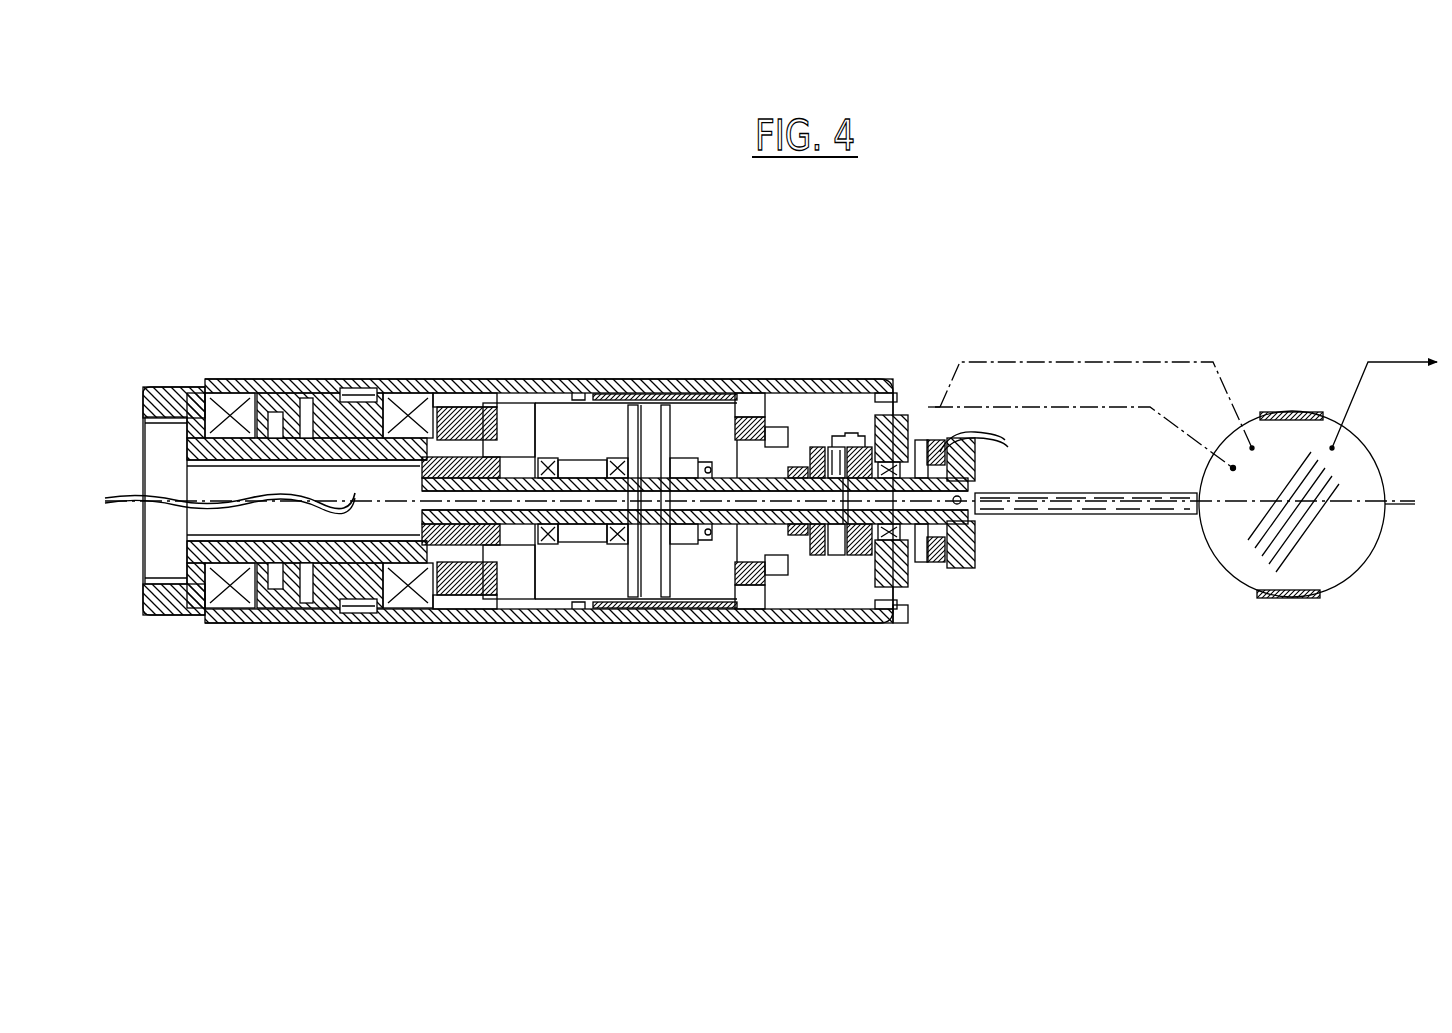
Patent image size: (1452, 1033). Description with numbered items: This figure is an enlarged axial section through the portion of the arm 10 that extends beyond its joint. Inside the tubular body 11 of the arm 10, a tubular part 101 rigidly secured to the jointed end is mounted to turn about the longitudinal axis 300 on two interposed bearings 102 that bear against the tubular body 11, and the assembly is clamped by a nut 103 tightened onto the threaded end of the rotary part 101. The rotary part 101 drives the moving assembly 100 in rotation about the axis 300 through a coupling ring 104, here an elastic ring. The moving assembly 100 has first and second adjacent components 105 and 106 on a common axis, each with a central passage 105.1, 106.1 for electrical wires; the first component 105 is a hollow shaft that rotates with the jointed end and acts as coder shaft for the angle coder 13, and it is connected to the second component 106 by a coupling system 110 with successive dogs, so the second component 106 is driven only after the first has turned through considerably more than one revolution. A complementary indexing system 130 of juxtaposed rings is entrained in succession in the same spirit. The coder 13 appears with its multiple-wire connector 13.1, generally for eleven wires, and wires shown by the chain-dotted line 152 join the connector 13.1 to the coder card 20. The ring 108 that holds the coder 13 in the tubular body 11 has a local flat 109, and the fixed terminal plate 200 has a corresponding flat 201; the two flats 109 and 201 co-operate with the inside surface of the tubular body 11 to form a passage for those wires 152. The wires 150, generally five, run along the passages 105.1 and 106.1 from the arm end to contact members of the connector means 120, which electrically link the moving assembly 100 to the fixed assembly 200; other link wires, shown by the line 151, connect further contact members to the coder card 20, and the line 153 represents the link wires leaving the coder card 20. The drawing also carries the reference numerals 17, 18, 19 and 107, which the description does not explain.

The arm 10 is at (647, 335).
The tubular body 11 is at (535, 380).
The angle coder 13 is at (607, 580).
The multiple-wire connector 13.1 is at (706, 548).
The mirror holder pad 17 is at (1297, 408).
The mirror holder pad 18 is at (1290, 600).
The mirror shaft 19 is at (1073, 517).
The coder card 20 is at (1340, 562).
The moving assembly 100 is at (516, 545).
The tubular part 101 is at (160, 614).
The bearings 102 is at (222, 393).
The nut 103 is at (457, 625).
The coupling ring 104 is at (500, 460).
The first component 105 is at (590, 480).
The central passage 105.1 is at (565, 545).
The second component 106 is at (966, 578).
The central passage 106.1 is at (901, 612).
The flange 107 is at (965, 543).
The ring 108 is at (752, 606).
The local flat 109 is at (740, 393).
The coupling system 110 is at (823, 427).
The connector means 120 is at (933, 400).
The indexing system 130 is at (325, 378).
The wires 150 is at (143, 503).
The link wires 151 is at (1095, 362).
The electrical connection wires 152 is at (1125, 409).
The link wires 153 is at (1388, 362).
The fixed terminal plate 200 is at (901, 618).
The flat 201 is at (910, 438).
The longitudinal axis 300 is at (1393, 510).